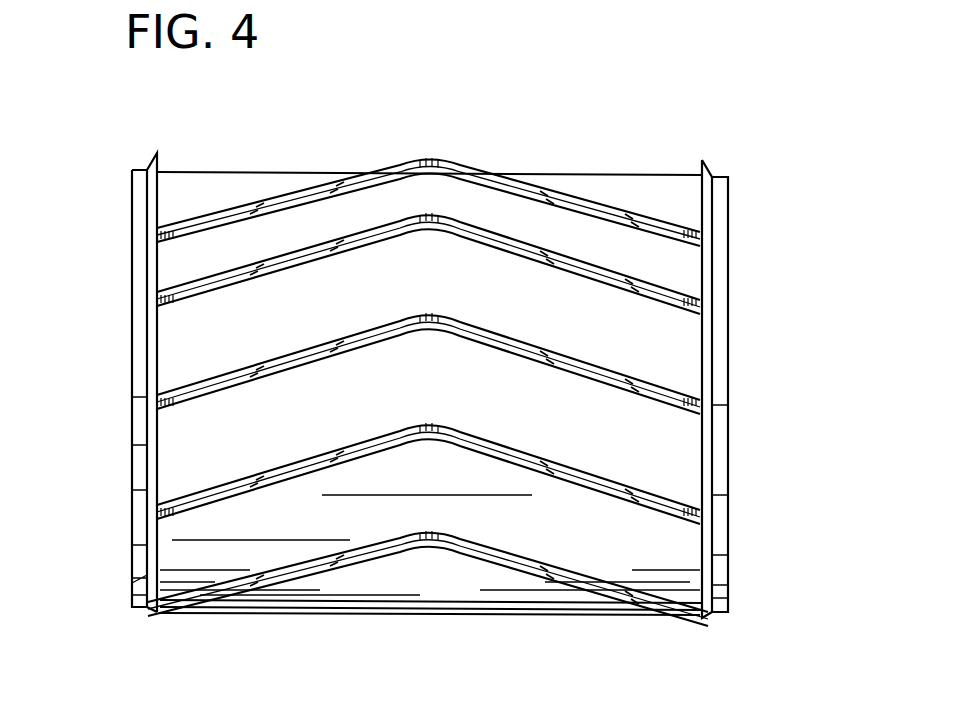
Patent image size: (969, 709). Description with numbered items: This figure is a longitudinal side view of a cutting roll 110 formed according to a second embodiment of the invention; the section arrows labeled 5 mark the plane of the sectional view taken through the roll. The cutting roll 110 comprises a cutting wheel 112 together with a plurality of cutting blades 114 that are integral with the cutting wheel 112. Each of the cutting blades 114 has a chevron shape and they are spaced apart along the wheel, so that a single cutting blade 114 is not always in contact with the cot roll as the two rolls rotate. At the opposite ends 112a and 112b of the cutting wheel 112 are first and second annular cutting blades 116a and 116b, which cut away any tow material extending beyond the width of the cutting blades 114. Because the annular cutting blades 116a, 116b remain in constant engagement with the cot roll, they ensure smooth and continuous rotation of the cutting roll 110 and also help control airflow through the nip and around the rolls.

The section line for FIG. 5 is at (430, 125).
The cutting roll 110 is at (612, 190).
The cutting wheel 112 is at (680, 349).
The end of the cutting wheel 112a is at (157, 343).
The end of the cutting wheel 112b is at (706, 443).
The cutting blade 114 is at (538, 352).
The first annular cutting blade 116a is at (152, 452).
The second annular cutting blade 116b is at (706, 198).